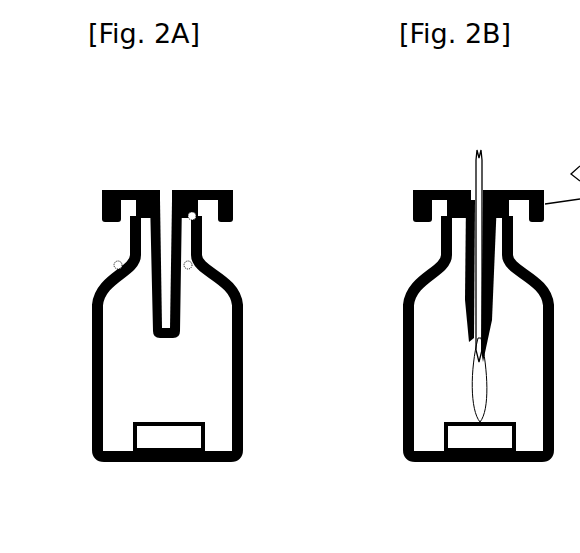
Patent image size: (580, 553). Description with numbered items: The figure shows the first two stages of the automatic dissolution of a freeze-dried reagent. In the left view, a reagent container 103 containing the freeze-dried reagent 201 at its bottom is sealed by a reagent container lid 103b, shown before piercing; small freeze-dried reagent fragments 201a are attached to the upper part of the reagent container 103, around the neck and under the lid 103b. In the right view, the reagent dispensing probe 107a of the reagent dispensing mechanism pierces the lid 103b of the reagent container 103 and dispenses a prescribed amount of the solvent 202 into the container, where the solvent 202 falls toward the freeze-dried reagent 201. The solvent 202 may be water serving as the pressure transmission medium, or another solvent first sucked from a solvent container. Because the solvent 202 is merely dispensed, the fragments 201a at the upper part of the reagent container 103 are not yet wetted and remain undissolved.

In FIG. 2A, the reagent container 103 is at (135, 349).
In FIG. 2A, the reagent container lid 103b is at (280, 241).
In FIG. 2A, the freeze-dried reagent 201 is at (205, 472).
In FIG. 2A, the freeze-dried reagent fragment 201a is at (165, 239).
In FIG. 2B, the reagent dispensing probe 107a is at (522, 226).
In FIG. 2B, the solvent 202 is at (478, 398).